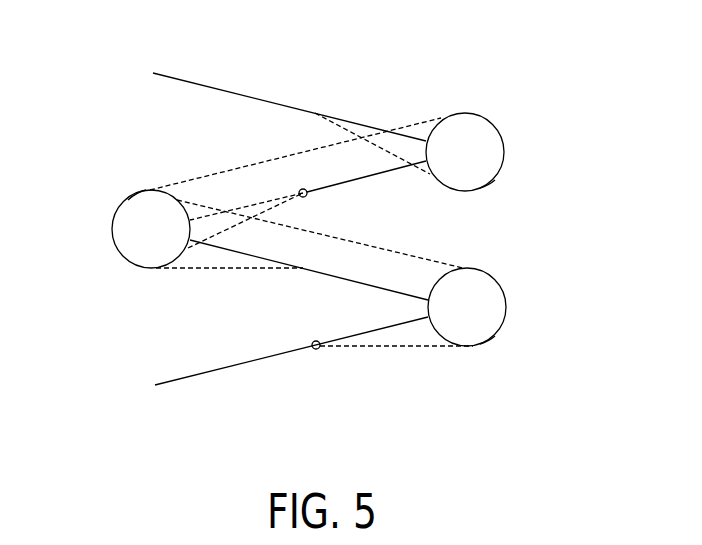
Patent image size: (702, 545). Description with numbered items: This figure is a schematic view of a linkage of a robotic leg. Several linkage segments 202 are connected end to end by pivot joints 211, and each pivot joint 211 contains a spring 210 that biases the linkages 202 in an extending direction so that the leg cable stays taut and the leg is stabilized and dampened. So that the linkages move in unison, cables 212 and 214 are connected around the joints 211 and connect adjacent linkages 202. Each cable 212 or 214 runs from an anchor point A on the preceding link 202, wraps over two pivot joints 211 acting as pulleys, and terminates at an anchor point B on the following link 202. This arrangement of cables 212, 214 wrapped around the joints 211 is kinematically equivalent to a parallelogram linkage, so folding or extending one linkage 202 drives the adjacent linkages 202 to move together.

The linkage 202 is at (222, 90).
The spring 210 is at (123, 228).
The pivot joint 211 is at (138, 192).
The cable 212 is at (430, 259).
The cable 214 is at (422, 120).
The anchor point A is at (315, 362).
The anchor point B is at (290, 182).